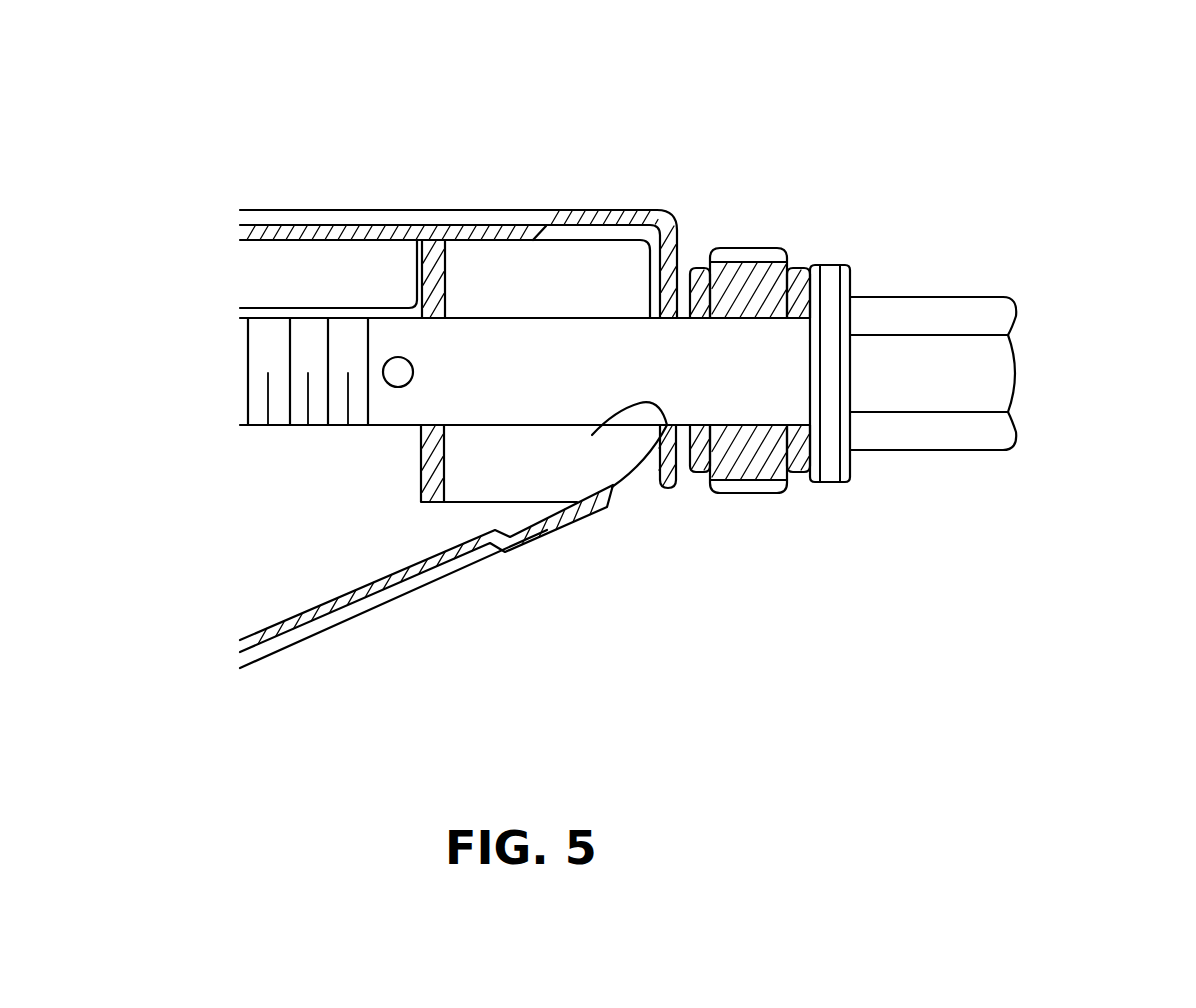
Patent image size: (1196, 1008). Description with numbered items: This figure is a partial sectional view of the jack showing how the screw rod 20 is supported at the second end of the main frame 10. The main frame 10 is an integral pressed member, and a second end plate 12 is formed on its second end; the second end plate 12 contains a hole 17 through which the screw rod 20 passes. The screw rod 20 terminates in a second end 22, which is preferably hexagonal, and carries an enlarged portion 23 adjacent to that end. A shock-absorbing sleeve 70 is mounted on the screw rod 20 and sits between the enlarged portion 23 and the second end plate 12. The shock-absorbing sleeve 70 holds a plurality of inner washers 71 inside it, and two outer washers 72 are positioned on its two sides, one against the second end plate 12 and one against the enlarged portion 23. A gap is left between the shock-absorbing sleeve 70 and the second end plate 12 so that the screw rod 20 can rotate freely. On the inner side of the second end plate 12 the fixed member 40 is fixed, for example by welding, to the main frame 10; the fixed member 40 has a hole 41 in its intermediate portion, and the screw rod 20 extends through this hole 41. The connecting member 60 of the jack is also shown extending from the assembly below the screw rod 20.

The main frame 10 is at (291, 210).
The second end plate 12 is at (684, 247).
The hole 17 is at (592, 435).
The screw rod 20 is at (278, 427).
The second end 22 is at (983, 372).
The enlarged portion 23 is at (830, 470).
The fixed member 40 is at (433, 245).
The hole 41 is at (432, 318).
The connecting member 60 is at (312, 638).
The shock-absorbing sleeve 70 is at (757, 250).
The inner washers 71 is at (758, 488).
The outer washers 72 is at (798, 270).